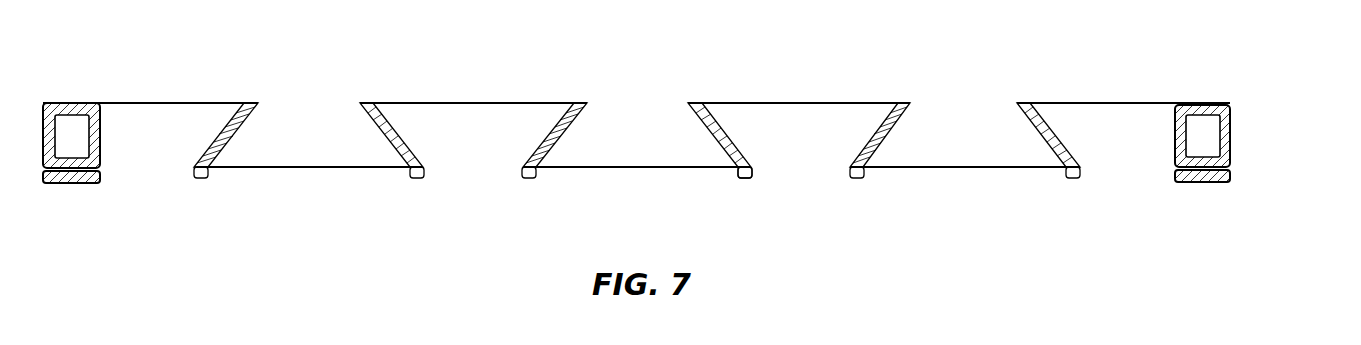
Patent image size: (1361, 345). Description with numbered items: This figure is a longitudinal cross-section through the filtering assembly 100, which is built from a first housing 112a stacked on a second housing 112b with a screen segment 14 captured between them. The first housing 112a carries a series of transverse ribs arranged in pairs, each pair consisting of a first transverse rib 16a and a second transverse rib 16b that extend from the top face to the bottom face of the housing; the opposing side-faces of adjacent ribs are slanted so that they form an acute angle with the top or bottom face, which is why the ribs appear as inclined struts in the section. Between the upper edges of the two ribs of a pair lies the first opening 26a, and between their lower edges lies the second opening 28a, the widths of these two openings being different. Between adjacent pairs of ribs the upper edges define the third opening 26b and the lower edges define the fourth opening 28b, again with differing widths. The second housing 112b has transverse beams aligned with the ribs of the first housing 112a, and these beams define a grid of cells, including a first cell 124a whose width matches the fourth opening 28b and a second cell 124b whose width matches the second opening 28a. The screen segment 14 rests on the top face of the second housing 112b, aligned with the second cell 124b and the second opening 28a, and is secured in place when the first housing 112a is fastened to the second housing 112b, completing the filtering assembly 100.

The filtering assembly 100 is at (1152, 42).
The screen segment 14 is at (175, 103).
The first transverse rib 16a is at (212, 140).
The second transverse rib 16b is at (375, 130).
The second opening 28a is at (260, 148).
The fourth opening 28b is at (477, 147).
The first opening 26a is at (773, 125).
The third opening 26b is at (640, 135).
The first cell 124a is at (753, 178).
The second cell 124b is at (740, 178).
The first housing 112a is at (1232, 127).
The second housing 112b is at (1232, 173).